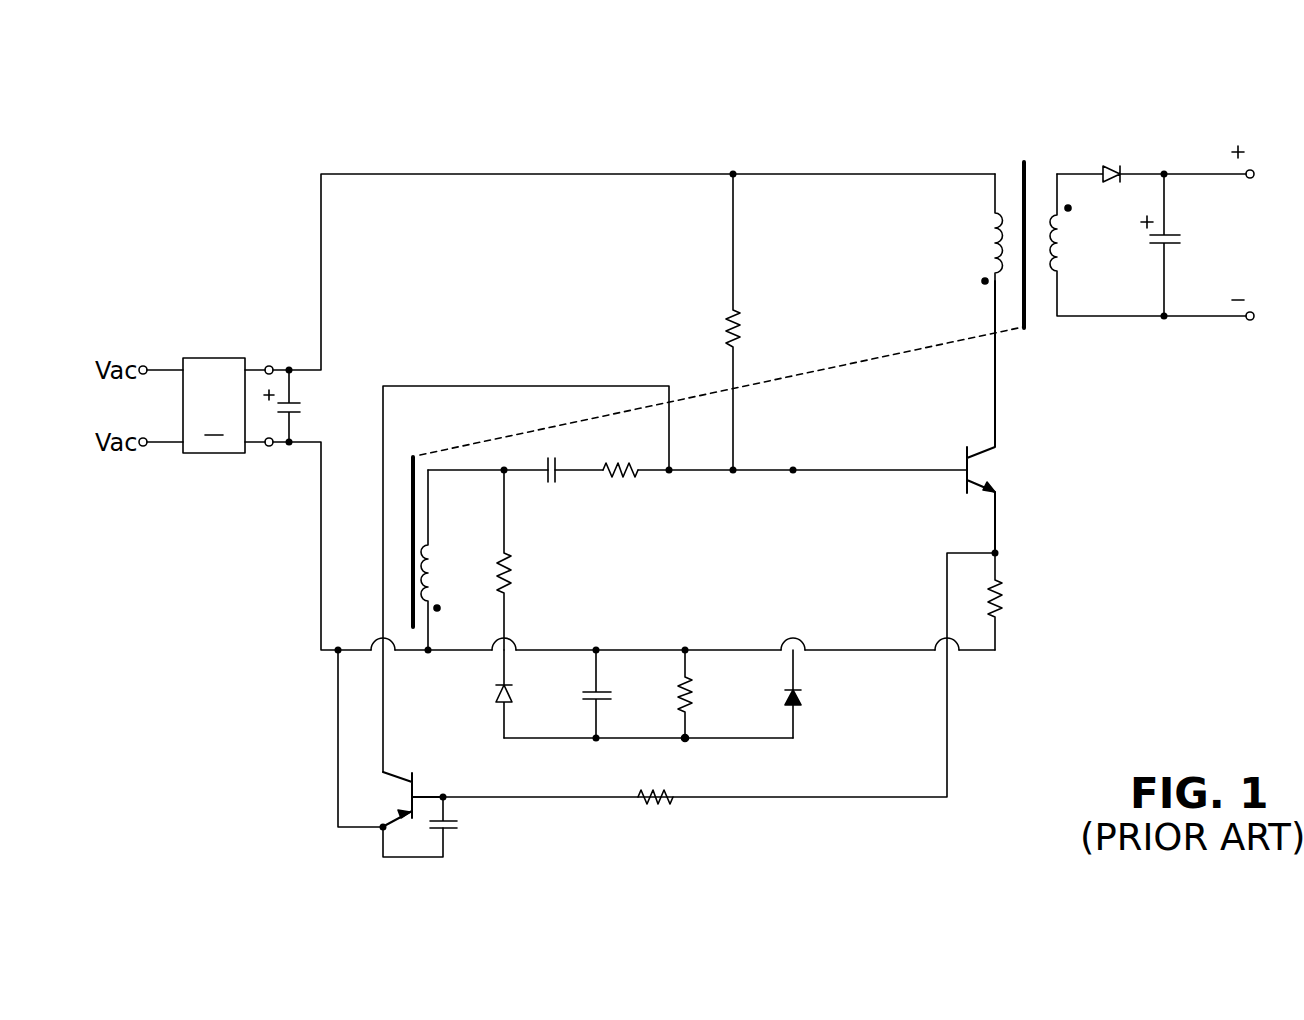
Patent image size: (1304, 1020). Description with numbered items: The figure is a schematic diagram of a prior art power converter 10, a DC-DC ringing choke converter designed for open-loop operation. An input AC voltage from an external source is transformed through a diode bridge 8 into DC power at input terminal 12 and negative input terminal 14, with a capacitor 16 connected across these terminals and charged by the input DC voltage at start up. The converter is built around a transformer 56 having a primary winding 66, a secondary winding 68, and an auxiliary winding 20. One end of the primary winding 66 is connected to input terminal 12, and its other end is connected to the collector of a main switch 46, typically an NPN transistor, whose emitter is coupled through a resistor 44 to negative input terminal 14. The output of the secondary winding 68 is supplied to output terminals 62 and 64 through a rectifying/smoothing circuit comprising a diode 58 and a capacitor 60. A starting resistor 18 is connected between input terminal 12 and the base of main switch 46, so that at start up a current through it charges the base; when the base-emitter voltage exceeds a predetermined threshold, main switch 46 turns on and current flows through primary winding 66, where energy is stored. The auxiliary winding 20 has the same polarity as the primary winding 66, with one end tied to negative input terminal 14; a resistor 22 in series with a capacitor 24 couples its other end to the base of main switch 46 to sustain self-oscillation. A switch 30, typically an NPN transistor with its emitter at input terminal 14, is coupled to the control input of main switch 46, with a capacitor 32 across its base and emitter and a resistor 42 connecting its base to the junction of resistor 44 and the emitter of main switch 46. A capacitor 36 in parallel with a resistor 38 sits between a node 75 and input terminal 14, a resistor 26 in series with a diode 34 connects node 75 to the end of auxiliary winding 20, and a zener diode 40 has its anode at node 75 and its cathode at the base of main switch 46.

The diode bridge 8 is at (213, 372).
The power converter 10 is at (338, 132).
The input terminal 12 is at (269, 365).
The input terminal 14 is at (269, 447).
The capacitor 16 is at (300, 399).
The starting resistor 18 is at (731, 314).
The auxiliary winding 20 is at (430, 565).
The resistor 22 is at (640, 476).
The capacitor 24 is at (557, 478).
The resistor 26 is at (507, 578).
The switch 30 is at (415, 778).
The capacitor 32 is at (452, 829).
The diode 34 is at (498, 692).
The capacitor 36 is at (585, 692).
The resistor 38 is at (680, 696).
The zener diode 40 is at (798, 700).
The resistor 42 is at (660, 805).
The resistor 44 is at (1000, 590).
The main switch 46 is at (965, 485).
The transformer 56 is at (1021, 168).
The diode 58 is at (1100, 172).
The capacitor 60 is at (1170, 236).
The output terminal 62 is at (1252, 168).
The output terminal 64 is at (1248, 321).
The primary winding 66 is at (993, 222).
The secondary winding 68 is at (1059, 256).
The node 75 is at (688, 742).